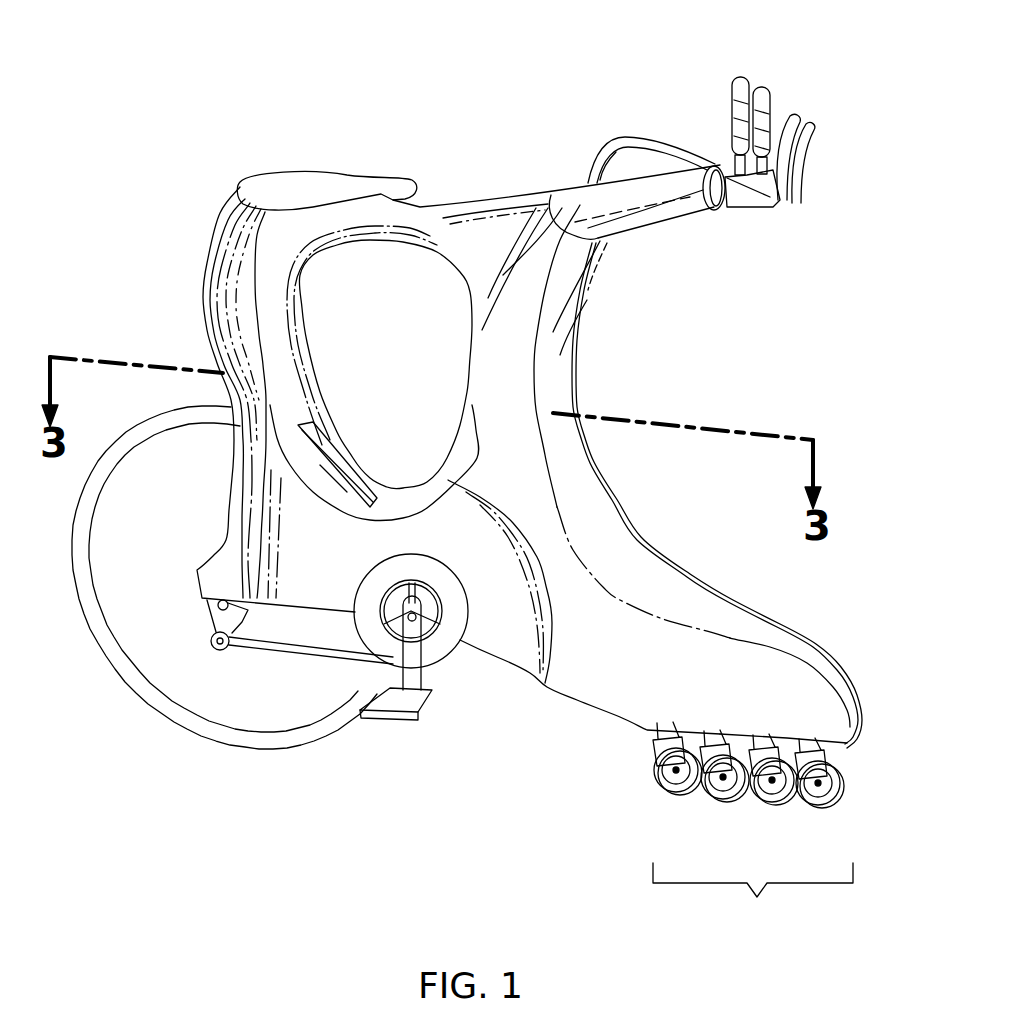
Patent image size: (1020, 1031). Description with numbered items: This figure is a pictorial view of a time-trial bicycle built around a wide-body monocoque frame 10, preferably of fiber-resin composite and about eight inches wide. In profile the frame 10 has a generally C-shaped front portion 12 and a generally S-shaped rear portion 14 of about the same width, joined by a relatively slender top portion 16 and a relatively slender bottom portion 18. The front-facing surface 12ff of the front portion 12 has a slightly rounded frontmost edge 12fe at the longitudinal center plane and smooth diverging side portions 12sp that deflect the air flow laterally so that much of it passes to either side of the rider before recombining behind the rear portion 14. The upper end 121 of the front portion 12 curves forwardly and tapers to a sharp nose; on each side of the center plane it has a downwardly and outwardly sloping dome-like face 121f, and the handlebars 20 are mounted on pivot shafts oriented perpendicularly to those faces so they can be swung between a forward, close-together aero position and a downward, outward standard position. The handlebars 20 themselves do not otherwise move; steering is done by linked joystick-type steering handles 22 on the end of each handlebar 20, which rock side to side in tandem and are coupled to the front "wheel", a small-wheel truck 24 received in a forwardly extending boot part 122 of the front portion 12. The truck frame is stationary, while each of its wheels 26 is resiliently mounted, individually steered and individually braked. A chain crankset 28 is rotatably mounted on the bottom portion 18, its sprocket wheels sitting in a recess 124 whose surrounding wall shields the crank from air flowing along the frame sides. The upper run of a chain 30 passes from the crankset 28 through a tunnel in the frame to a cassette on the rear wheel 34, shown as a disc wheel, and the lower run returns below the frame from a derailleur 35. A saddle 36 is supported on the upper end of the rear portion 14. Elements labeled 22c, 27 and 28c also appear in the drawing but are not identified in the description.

The frame 10 is at (627, 517).
The front portion 12 is at (520, 383).
The frontmost edge 12fe is at (592, 463).
The front-facing surface 12ff is at (557, 328).
The side portions 12sp is at (583, 278).
The rear portion 14 is at (257, 333).
The top portion 16 is at (427, 223).
The bottom portion 18 is at (487, 627).
The handlebars 20 is at (647, 150).
The steering handles 22 is at (759, 90).
The fastener cylinder 22c is at (718, 176).
The small-wheel truck 24 is at (753, 898).
The wheels 26 is at (722, 800).
The hook members 27 is at (787, 167).
The chain crankset 28 is at (375, 633).
The crank arm pedal 28c is at (410, 670).
The chain 30 is at (290, 653).
The rear wheel 34 is at (130, 627).
The derailleur 35 is at (215, 647).
The saddle 36 is at (260, 182).
The upper end 121 is at (577, 180).
The dome-like face 121f is at (637, 227).
The boot part 122 is at (720, 677).
The recess 124 is at (517, 637).